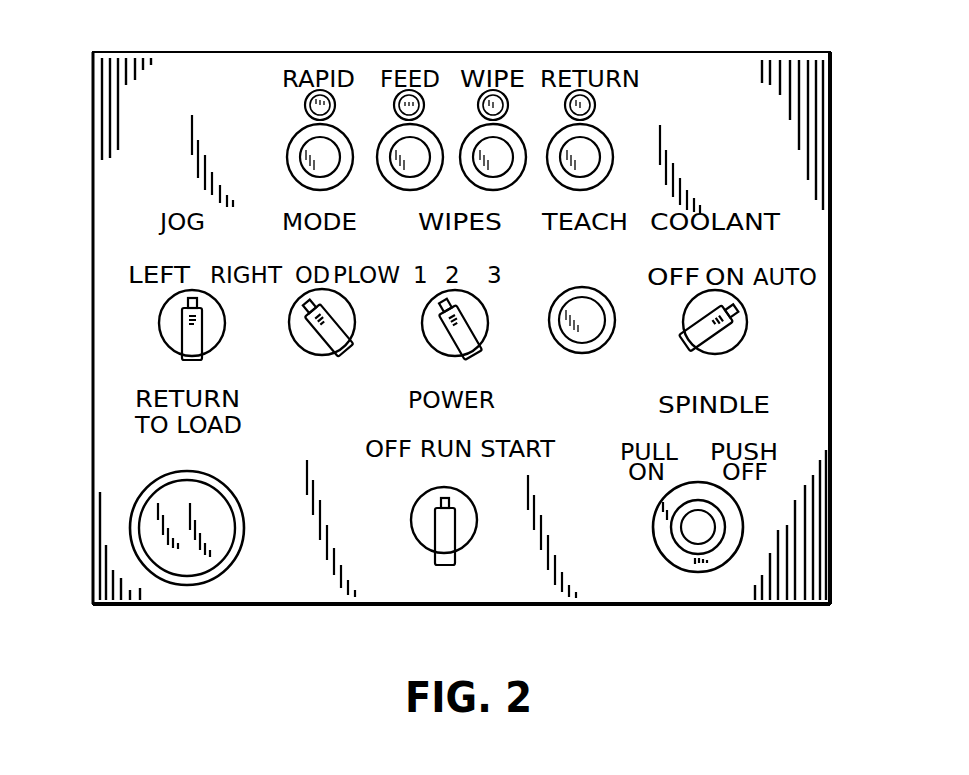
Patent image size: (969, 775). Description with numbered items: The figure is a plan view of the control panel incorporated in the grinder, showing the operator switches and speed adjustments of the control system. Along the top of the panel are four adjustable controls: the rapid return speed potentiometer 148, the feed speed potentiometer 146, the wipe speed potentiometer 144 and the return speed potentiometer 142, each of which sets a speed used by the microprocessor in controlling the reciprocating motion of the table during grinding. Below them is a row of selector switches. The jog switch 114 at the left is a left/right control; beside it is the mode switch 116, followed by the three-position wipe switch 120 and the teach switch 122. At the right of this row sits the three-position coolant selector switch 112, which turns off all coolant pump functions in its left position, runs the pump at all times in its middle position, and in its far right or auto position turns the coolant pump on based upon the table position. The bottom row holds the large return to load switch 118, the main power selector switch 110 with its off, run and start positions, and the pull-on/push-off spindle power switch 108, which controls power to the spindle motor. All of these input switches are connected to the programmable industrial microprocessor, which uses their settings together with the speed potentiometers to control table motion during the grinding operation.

The spindle power switch 108 is at (743, 535).
The main power selector switch 110 is at (459, 554).
The coolant selector switch 112 is at (754, 335).
The jog switch 114 is at (157, 334).
The mode switch 116 is at (321, 356).
The return to load switch 118 is at (131, 521).
The three-position wipe switch 120 is at (462, 355).
The teach switch 122 is at (583, 353).
The return speed potentiometer 142 is at (616, 142).
The wipe speed potentiometer 144 is at (516, 134).
The feed speed potentiometer 146 is at (432, 134).
The rapid return speed potentiometer 148 is at (347, 135).